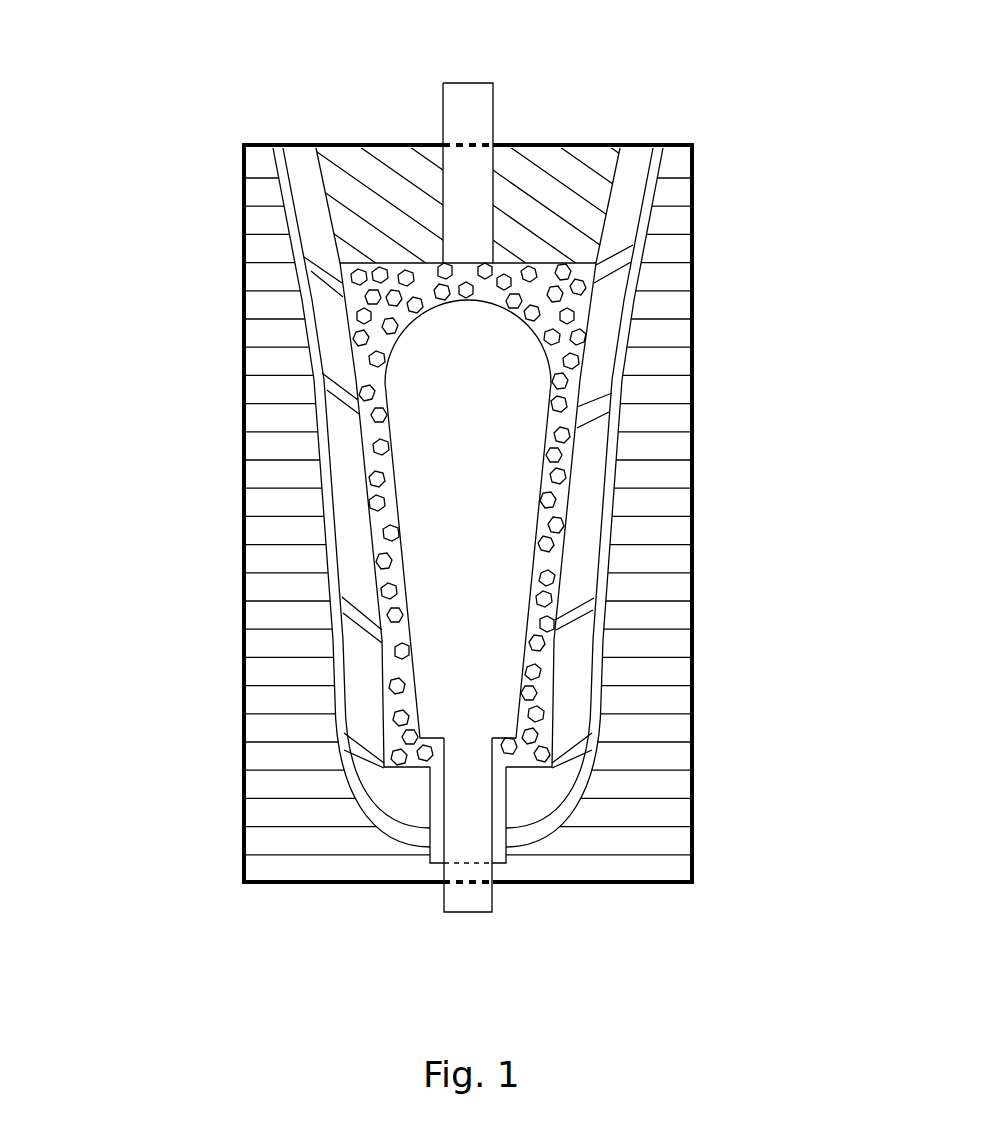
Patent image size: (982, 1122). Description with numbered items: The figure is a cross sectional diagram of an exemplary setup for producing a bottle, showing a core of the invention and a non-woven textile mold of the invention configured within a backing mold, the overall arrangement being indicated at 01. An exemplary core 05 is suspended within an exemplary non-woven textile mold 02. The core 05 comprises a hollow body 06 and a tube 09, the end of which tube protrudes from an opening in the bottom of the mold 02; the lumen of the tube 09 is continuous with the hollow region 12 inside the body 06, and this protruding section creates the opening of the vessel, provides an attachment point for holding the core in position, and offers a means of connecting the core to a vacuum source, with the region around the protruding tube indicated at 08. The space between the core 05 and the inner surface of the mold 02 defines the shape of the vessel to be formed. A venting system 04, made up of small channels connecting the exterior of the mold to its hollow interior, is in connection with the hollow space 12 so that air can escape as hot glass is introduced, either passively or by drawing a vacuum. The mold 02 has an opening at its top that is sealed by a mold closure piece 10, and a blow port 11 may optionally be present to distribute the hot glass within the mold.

The furnace housing 01 is at (242, 183).
The non-woven textile mold 02 is at (663, 248).
The venting system 04 is at (603, 560).
The core 05 is at (387, 418).
The hollow body 06 is at (482, 451).
The outlet neck 08 is at (430, 858).
The tube 09 is at (475, 913).
The mold closure piece 10 is at (385, 172).
The blow port 11 is at (480, 82).
The hollow region 12 is at (390, 317).